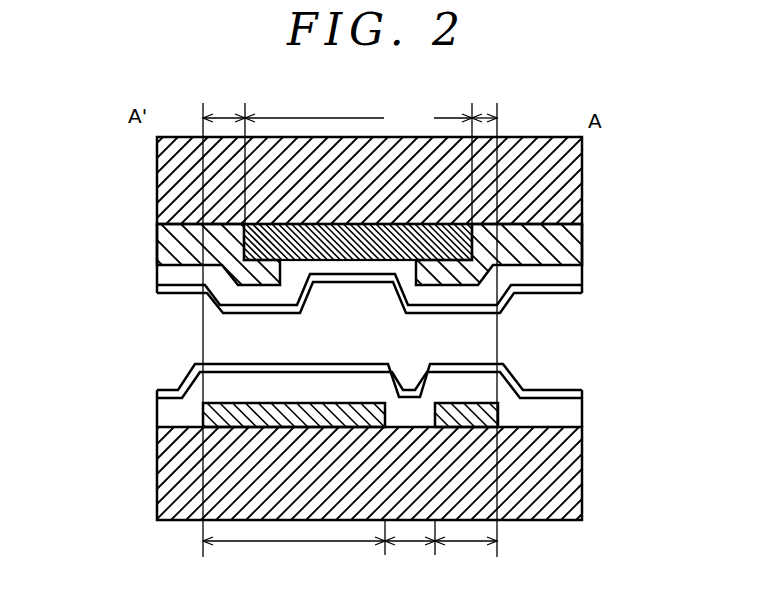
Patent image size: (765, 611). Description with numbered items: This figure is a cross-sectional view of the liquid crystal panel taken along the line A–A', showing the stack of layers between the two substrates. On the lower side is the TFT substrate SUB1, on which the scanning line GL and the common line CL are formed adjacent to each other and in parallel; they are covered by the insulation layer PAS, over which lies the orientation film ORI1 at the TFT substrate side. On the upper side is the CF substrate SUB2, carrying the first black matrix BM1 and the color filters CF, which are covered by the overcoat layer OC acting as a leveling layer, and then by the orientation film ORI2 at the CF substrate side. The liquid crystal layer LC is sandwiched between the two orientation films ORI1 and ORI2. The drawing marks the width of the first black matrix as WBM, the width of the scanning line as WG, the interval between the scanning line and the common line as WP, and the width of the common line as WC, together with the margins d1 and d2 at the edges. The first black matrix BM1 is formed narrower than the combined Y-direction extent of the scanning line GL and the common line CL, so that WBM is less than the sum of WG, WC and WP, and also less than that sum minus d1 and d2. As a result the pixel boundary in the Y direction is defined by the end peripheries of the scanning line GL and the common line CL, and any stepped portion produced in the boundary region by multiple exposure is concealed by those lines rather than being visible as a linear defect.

The CF substrate SUB2 is at (283, 147).
The first black matrix BM1 is at (326, 240).
The color filters CF is at (567, 240).
The overcoat layer OC is at (157, 275).
The orientation film at the CF substrate side ORI2 is at (173, 295).
The liquid crystal layer LC is at (568, 355).
The orientation film at the TFT substrate side ORI1 is at (177, 388).
The insulation layer PAS is at (157, 403).
The scanning line GL is at (203, 415).
The common line CL is at (498, 415).
The TFT substrate SUB1 is at (162, 499).
The distance d1 is at (225, 115).
The distance d2 is at (487, 115).
The width of the first black matrix WBM is at (358, 118).
The width of the scanning line WG is at (294, 553).
The interval between the scanning line and the common line WP is at (410, 555).
The width of the common line WC is at (466, 555).